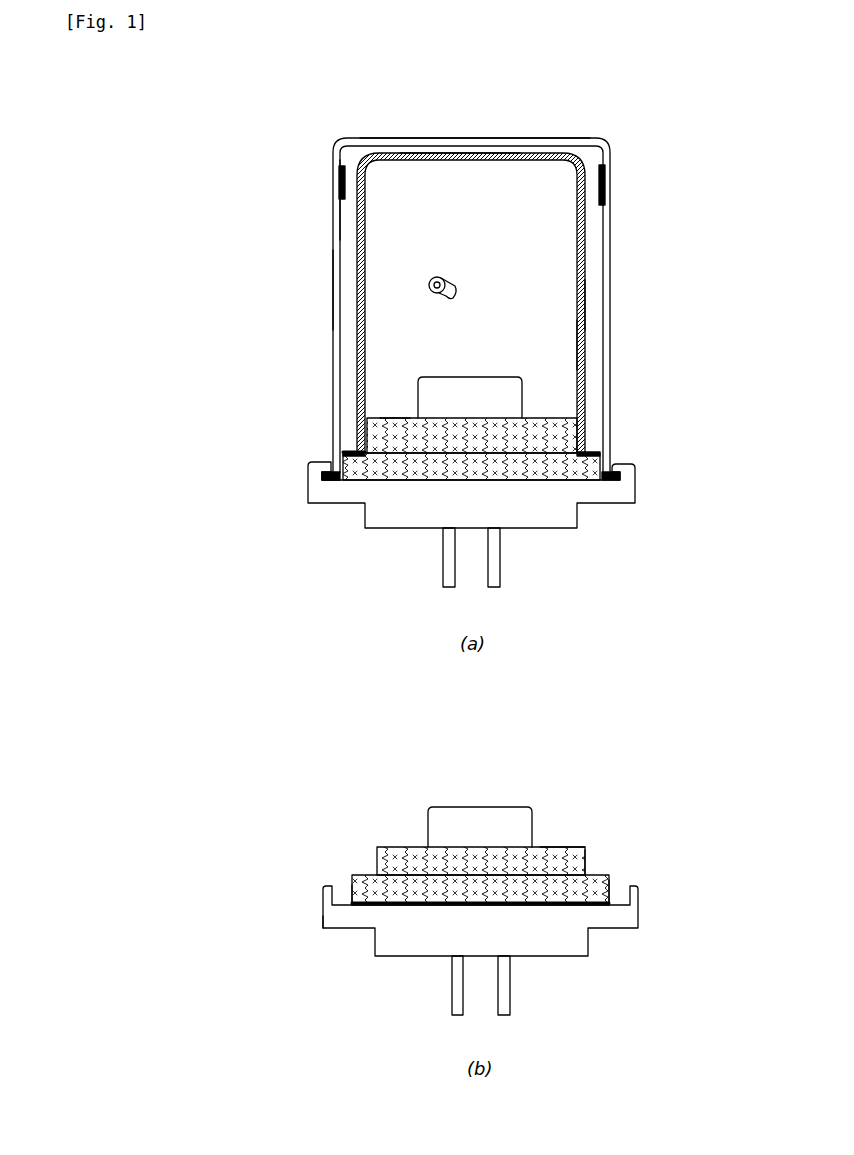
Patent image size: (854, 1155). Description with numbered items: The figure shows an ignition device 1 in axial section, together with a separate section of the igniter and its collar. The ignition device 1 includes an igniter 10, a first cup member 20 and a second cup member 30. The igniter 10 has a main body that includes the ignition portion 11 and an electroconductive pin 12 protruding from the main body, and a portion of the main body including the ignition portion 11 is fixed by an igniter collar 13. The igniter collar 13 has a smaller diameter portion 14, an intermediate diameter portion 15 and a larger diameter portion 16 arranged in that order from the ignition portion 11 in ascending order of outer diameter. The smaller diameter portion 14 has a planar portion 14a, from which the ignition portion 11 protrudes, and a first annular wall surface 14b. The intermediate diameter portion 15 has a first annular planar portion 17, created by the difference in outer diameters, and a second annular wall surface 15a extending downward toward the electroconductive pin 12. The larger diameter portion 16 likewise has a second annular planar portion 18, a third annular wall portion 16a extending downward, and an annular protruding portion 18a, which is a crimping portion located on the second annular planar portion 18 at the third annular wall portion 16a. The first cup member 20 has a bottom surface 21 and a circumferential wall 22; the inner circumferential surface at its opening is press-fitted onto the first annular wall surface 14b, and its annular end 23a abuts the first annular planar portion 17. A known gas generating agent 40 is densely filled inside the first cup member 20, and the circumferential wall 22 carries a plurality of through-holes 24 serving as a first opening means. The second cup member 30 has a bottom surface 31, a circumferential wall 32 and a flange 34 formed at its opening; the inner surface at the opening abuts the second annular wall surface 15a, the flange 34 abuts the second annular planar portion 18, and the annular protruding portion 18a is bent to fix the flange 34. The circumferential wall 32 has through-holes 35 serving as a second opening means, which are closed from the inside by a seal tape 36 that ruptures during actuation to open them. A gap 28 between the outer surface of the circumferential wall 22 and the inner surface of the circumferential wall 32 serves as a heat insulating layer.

The ignition device 1 is at (572, 120).
The igniter 10 is at (513, 364).
The ignition portion 11 is at (480, 377).
The electroconductive pin 12 is at (500, 565).
The igniter collar 13 is at (704, 410).
The smaller diameter portion 14 is at (565, 438).
The planar portion 14a is at (395, 418).
The first annular wall surface 14b is at (588, 865).
The intermediate diameter portion 15 is at (588, 462).
The second annular wall surface 15a is at (610, 895).
The larger diameter portion 16 is at (620, 487).
The third annular wall portion 16a is at (322, 918).
The first annular planar portion 17 is at (352, 454).
The second annular planar portion 18 is at (347, 902).
The annular protruding portion 18a is at (325, 463).
The first cup member 20 is at (590, 243).
The bottom surface 21 is at (455, 153).
The circumferential wall 22 is at (584, 330).
The annular end 23a is at (355, 452).
The through-holes 24 is at (584, 302).
The gap 28 is at (348, 320).
The second cup member 30 is at (318, 248).
The bottom surface 31 is at (401, 138).
The circumferential wall 32 is at (331, 292).
The flange 34 is at (322, 470).
The through-holes 35 is at (334, 186).
The seal tape 36 is at (345, 186).
The gas generating agent 40 is at (455, 286).